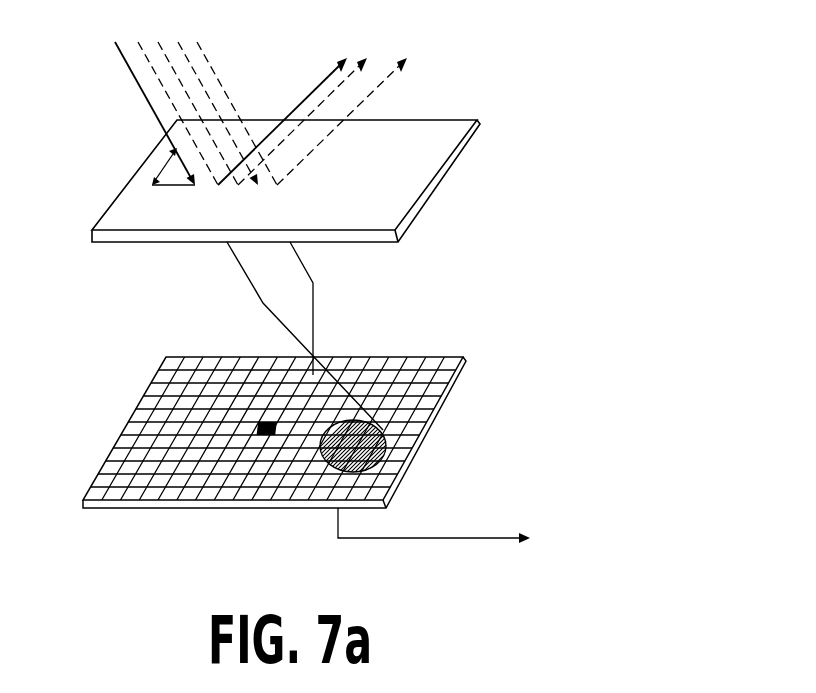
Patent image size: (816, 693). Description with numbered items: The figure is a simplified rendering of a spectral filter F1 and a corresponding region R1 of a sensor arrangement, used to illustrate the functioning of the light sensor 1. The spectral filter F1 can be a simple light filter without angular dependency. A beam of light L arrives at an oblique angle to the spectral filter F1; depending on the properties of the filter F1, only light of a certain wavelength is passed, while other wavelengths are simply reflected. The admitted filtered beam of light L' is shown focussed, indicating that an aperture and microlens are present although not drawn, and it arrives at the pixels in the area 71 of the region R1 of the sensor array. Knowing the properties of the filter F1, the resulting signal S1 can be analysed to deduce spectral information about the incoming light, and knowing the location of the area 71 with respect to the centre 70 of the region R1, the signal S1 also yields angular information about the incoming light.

The beam of light L is at (233, 113).
The spectral filter F1 is at (442, 130).
The light sensor 1 is at (553, 193).
The admitted filtered beam of light L' is at (308, 336).
The region of the sensor arrangement R1 is at (430, 363).
The area 71 is at (388, 440).
The centre of the region 70 is at (262, 435).
The resulting signal S1 is at (495, 540).